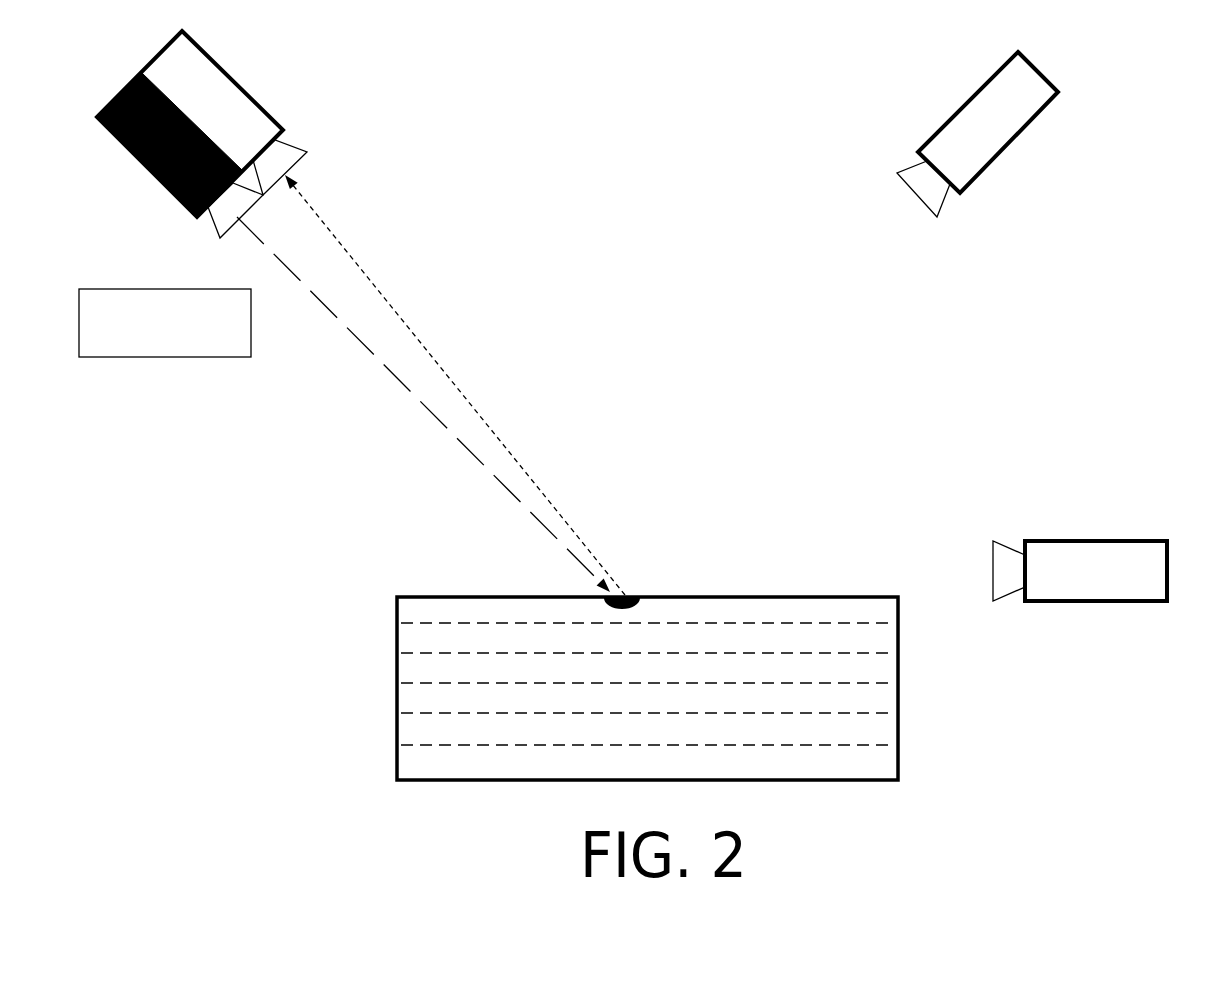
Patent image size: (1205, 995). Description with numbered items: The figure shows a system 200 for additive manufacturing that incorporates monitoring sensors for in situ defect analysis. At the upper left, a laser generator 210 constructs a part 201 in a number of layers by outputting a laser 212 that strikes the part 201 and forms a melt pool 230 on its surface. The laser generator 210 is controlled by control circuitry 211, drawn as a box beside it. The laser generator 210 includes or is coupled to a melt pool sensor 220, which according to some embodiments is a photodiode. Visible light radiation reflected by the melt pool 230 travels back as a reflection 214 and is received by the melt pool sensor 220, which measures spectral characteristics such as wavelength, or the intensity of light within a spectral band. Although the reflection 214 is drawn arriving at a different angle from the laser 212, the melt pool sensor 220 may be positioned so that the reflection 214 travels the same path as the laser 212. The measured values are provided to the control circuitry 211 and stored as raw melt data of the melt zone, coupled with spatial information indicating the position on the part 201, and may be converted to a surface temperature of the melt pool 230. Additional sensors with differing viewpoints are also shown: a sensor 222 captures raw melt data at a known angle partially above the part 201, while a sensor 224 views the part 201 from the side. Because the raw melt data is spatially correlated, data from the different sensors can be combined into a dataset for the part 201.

The system 200 is at (802, 49).
The part 201 is at (577, 688).
The laser generator 210 is at (151, 147).
The control circuitry 211 is at (165, 323).
The laser 212 is at (423, 404).
The reflection 214 is at (455, 385).
The melt pool sensor 220 is at (207, 134).
The sensor 222 is at (989, 134).
The sensor 224 is at (1086, 549).
The melt pool 230 is at (671, 569).